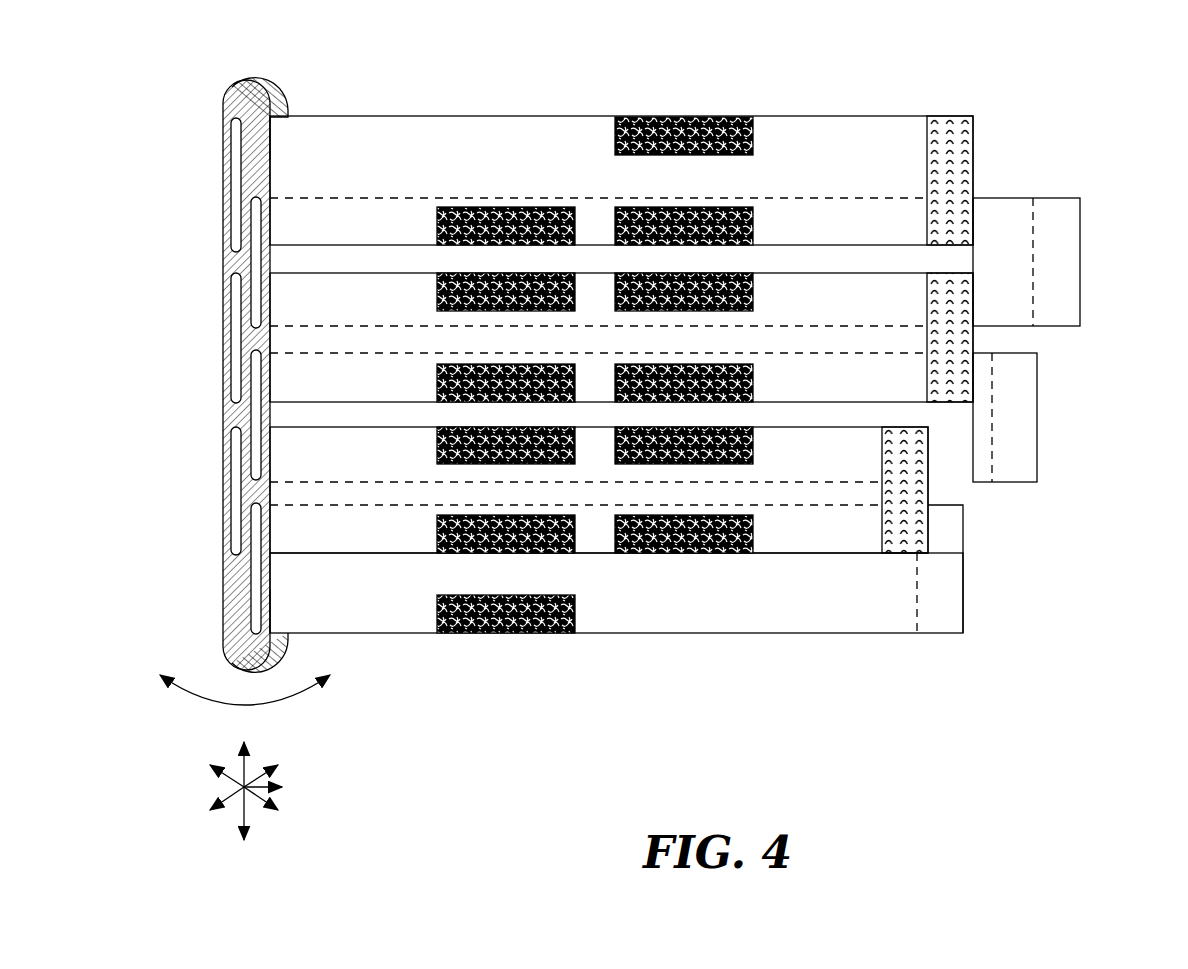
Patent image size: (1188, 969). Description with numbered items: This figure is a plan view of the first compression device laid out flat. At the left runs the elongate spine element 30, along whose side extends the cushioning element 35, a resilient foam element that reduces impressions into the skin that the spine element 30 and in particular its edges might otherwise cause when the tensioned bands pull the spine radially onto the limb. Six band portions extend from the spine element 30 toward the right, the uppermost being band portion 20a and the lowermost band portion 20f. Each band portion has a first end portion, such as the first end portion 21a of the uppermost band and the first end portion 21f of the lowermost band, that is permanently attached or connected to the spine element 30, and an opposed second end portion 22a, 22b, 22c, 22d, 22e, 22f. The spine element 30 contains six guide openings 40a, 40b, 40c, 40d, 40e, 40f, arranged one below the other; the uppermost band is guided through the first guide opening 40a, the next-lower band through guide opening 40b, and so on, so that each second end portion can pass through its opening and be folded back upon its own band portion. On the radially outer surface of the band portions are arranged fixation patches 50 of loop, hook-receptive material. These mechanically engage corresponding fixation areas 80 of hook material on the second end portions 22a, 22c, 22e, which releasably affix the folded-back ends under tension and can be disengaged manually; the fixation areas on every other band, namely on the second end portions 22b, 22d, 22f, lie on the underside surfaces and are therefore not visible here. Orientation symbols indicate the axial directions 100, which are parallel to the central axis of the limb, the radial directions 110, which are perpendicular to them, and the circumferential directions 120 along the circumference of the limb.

The spine element 30 is at (201, 366).
The cushioning element 35 is at (271, 88).
The band portion 20a is at (492, 146).
The band portion 20f is at (605, 615).
The first end portion 21a is at (284, 143).
The first end portion 21f is at (283, 610).
The second end portion 22a is at (910, 142).
The second end portion 22b is at (1005, 280).
The second end portion 22c is at (905, 340).
The second end portion 22d is at (970, 455).
The second end portion 22e is at (855, 493).
The second end portion 22f is at (895, 615).
The first guide opening 40a is at (236, 171).
The guide opening 40b is at (256, 260).
The guide opening 40c is at (236, 317).
The guide opening 40d is at (256, 405).
The guide opening 40e is at (236, 477).
The guide opening 40f is at (256, 563).
The fixation patches 50 is at (548, 206).
The fixation areas 80 is at (957, 160).
The axial directions 100 is at (240, 768).
The radial directions 110 is at (256, 787).
The circumferential directions 120 is at (285, 704).